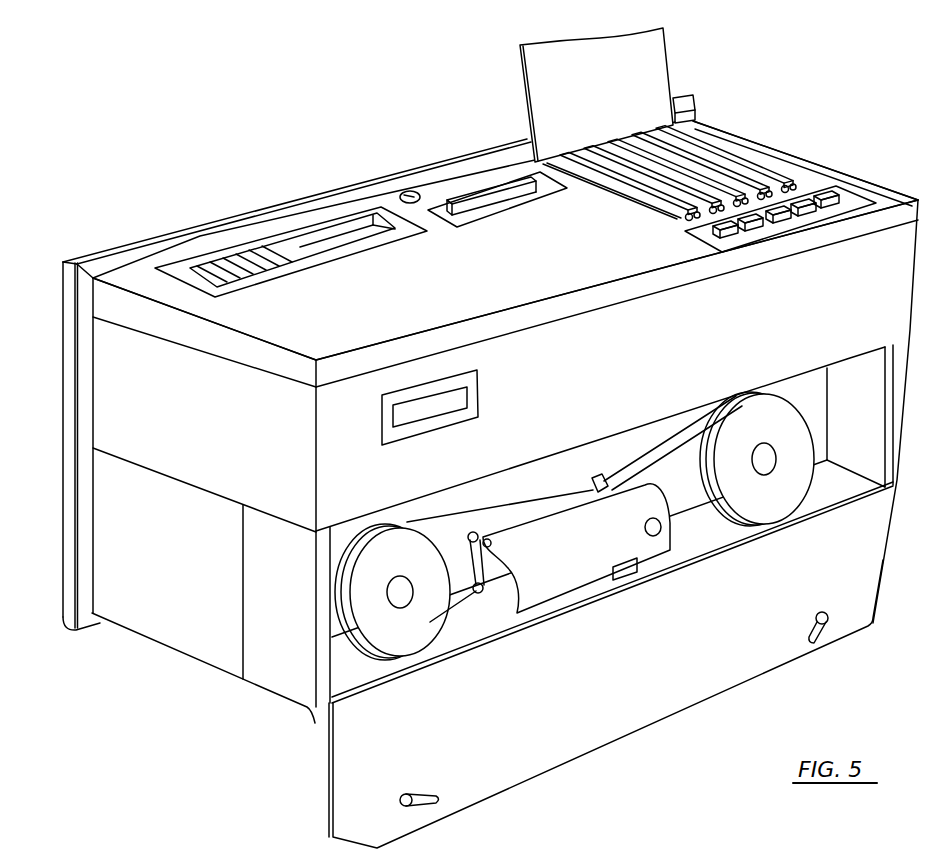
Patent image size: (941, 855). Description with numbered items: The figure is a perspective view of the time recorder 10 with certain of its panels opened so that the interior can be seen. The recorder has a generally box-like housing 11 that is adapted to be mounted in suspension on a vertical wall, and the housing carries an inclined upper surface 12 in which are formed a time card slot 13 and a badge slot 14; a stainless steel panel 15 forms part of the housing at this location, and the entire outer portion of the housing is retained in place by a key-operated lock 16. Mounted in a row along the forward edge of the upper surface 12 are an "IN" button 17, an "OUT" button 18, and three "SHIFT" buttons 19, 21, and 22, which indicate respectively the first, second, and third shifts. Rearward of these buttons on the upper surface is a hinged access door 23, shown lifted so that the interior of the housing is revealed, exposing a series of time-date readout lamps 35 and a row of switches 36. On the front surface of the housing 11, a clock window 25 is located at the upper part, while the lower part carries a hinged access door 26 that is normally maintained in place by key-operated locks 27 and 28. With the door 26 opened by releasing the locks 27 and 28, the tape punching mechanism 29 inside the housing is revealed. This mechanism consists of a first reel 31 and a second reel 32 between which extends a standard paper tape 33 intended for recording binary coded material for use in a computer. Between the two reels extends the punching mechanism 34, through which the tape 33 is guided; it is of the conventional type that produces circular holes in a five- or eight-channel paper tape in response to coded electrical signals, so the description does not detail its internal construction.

The time recorder 10 is at (181, 229).
The housing 11 is at (150, 618).
The inclined upper surface 12 is at (125, 280).
The time card slot 13 is at (305, 238).
The badge slot 14 is at (475, 192).
The stainless steel panel 15 is at (390, 198).
The key-operated lock 16 is at (410, 191).
The "IN" button 17 is at (733, 238).
The "OUT" button 18 is at (760, 228).
The "SHIFT" button 19 is at (790, 223).
The "SHIFT" button 21 is at (815, 215).
The "SHIFT" button 22 is at (840, 210).
The hinged access door 23 is at (662, 95).
The clock window 25 is at (470, 393).
The hinged access door 26 is at (598, 742).
The key-operated lock 27 is at (440, 803).
The key-operated lock 28 is at (830, 640).
The tape punching mechanism 29 is at (597, 570).
The first reel 31 is at (408, 640).
The second reel 32 is at (780, 503).
The paper tape 33 is at (660, 462).
The punching mechanism 34 is at (542, 595).
The time-date readout lamps 35 is at (733, 160).
The switches 36 is at (795, 183).